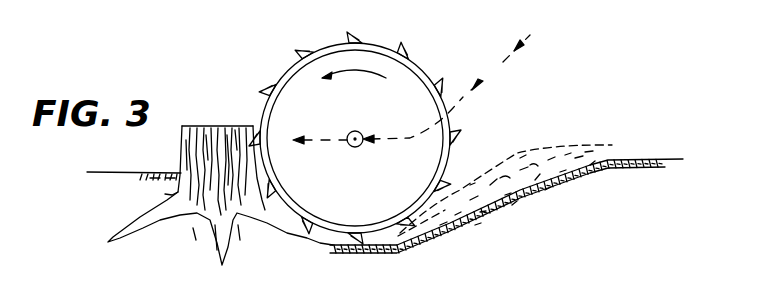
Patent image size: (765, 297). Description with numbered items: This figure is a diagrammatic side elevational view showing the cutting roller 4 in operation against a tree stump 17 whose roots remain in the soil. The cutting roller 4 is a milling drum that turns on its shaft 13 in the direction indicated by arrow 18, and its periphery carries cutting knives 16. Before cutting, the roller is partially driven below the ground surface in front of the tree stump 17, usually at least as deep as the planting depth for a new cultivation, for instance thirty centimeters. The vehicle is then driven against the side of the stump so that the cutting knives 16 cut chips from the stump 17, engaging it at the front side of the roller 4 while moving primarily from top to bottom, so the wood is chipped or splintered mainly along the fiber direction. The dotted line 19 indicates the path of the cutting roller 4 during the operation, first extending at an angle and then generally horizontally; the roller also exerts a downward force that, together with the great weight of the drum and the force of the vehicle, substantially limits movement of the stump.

The cutting roller 4 is at (287, 66).
The shaft 13 is at (360, 146).
The cutting knives 16 is at (407, 48).
The tree stump 17 is at (208, 138).
The arrow 18 is at (358, 71).
The dotted line 19 is at (503, 70).